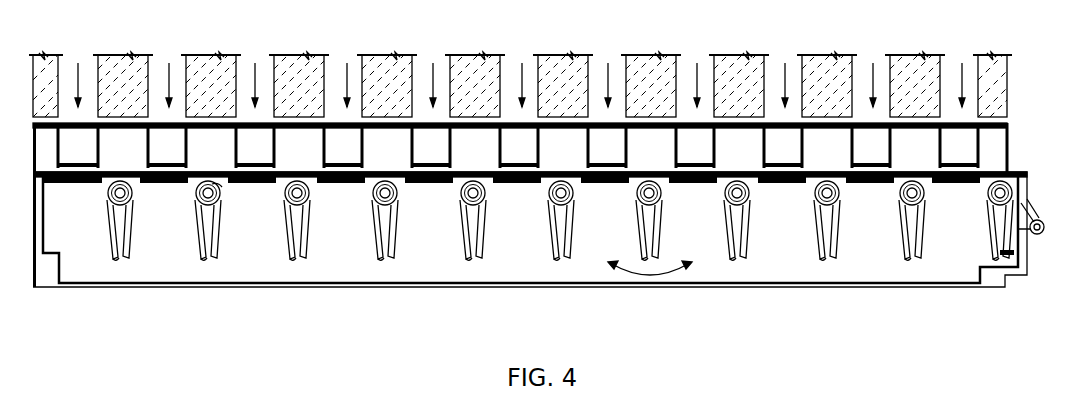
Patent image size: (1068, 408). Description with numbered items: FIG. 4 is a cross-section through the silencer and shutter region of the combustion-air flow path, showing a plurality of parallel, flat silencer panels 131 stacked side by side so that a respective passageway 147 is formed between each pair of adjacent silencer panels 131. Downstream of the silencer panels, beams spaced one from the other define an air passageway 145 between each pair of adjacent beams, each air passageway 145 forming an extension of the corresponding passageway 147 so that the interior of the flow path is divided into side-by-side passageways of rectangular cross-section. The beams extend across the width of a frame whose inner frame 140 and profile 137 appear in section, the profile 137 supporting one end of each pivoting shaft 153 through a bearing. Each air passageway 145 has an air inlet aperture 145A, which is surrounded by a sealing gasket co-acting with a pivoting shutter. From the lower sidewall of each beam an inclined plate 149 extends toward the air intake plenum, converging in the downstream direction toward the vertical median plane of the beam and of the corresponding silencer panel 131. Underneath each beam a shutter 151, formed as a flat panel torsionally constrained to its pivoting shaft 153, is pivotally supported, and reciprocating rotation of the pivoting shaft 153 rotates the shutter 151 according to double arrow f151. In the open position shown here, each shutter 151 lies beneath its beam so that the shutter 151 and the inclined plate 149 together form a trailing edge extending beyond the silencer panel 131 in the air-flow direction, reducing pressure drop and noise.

The silencer panel 131 is at (458, 53).
The passageway 147 is at (255, 57).
The air passageway 145 is at (608, 158).
The air inlet aperture 145A is at (699, 186).
The profile 137 is at (290, 276).
The inner frame 140 is at (48, 237).
The shutter 151 is at (108, 227).
The inclined plate 149 is at (136, 228).
The pivoting shaft 153 is at (222, 188).
The double arrow f151 is at (650, 291).